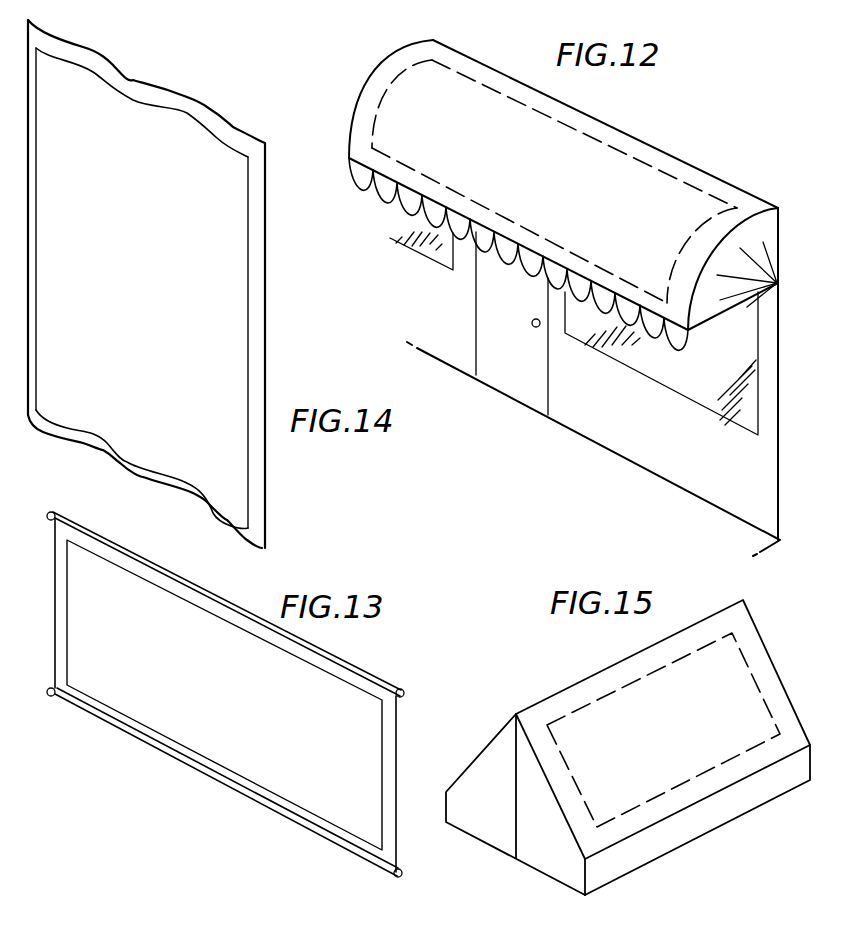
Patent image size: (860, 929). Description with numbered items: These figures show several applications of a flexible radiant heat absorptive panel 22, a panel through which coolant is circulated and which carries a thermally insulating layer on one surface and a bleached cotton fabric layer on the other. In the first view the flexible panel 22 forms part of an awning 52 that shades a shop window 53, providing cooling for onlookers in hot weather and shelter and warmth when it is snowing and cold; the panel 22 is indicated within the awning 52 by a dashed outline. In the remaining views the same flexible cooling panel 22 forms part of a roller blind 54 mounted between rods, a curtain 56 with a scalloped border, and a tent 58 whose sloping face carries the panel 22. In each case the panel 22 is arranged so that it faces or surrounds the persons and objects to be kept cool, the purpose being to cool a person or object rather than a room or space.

In FIG. 12, the panel 22 is at (611, 150).
In FIG. 13, the panel 22 is at (352, 752).
In FIG. 14, the panel 22 is at (220, 297).
In FIG. 15, the panel 22 is at (628, 687).
In FIG. 12, the awning 52 is at (746, 206).
In FIG. 12, the shop window 53 is at (748, 333).
In FIG. 13, the roller blind 54 is at (397, 832).
In FIG. 14, the curtain 56 is at (200, 122).
In FIG. 15, the tent 58 is at (780, 676).